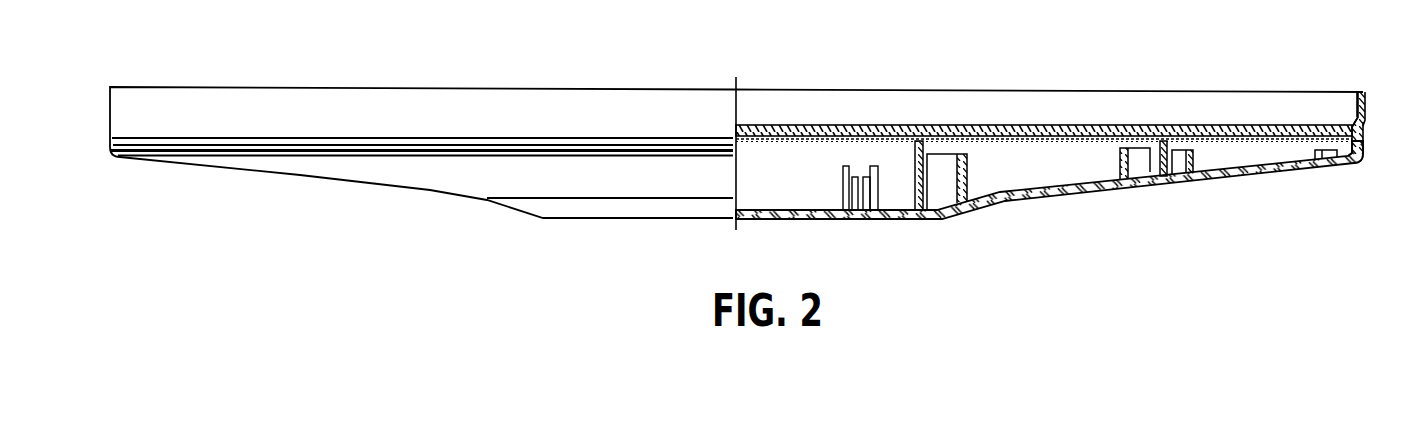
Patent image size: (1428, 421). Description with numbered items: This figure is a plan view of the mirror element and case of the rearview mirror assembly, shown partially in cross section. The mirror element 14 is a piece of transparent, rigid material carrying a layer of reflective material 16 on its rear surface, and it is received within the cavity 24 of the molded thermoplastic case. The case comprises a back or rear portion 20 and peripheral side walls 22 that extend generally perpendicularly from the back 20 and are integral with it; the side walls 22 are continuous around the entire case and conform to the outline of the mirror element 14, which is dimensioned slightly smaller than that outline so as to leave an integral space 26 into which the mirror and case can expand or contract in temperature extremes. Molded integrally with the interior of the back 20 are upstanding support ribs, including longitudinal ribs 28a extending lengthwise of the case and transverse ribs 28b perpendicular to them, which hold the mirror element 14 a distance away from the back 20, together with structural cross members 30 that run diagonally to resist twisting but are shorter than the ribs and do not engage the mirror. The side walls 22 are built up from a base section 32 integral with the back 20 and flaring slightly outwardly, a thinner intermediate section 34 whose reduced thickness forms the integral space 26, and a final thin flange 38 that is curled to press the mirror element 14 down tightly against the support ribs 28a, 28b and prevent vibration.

The mirror element 14 is at (1009, 123).
The layer of reflective material 16 is at (817, 125).
The back or rear portion 20 is at (1043, 194).
The peripheral side walls 22 is at (898, 113).
The cavity 24 is at (818, 185).
The integral space 26 is at (1361, 121).
The longitudinal ribs 28a is at (1044, 172).
The transverse ribs 28b is at (915, 187).
The structural cross members 30 is at (940, 203).
The base section 32 is at (1362, 159).
The intermediate section 34 is at (1364, 140).
The flange 38 is at (1360, 91).